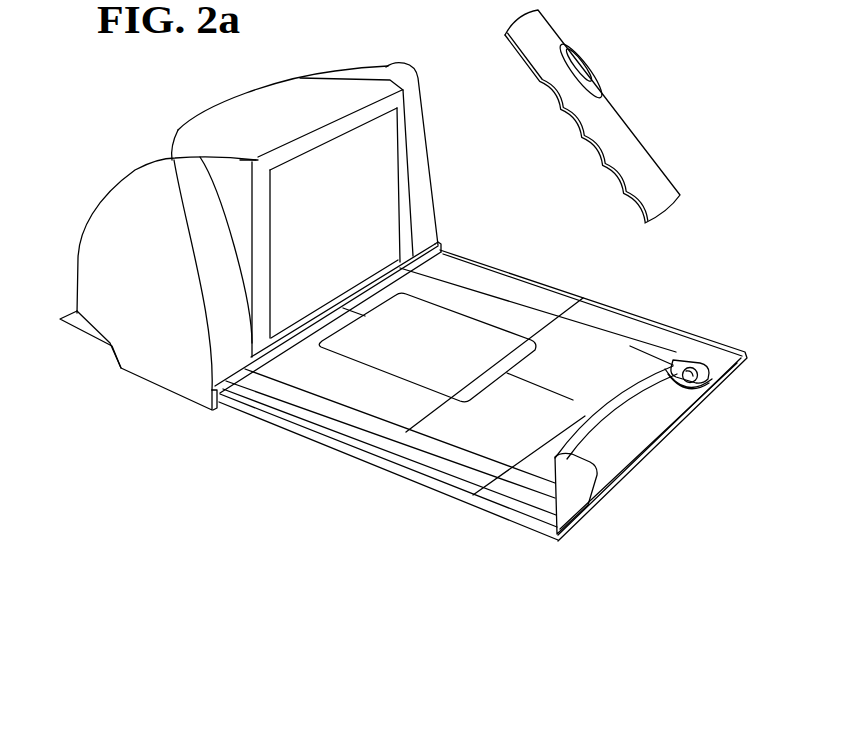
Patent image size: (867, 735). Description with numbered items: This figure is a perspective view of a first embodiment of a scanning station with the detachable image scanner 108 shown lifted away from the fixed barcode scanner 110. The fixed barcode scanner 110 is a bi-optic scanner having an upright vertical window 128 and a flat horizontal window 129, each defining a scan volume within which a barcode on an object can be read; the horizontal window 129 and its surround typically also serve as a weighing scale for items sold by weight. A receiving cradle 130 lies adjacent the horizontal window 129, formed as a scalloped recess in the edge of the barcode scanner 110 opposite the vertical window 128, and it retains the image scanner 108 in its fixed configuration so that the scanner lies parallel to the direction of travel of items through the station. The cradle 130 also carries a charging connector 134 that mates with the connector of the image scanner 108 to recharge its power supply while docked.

The detachable image scanner 108 is at (633, 127).
The fixed barcode scanner 110 is at (325, 404).
The vertical window 128 is at (380, 188).
The horizontal window 129 is at (443, 373).
The receiving cradle 130 is at (610, 447).
The charging connector 134 is at (717, 390).